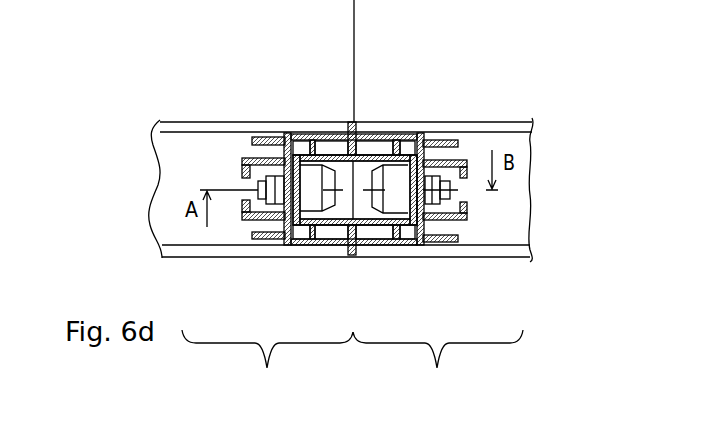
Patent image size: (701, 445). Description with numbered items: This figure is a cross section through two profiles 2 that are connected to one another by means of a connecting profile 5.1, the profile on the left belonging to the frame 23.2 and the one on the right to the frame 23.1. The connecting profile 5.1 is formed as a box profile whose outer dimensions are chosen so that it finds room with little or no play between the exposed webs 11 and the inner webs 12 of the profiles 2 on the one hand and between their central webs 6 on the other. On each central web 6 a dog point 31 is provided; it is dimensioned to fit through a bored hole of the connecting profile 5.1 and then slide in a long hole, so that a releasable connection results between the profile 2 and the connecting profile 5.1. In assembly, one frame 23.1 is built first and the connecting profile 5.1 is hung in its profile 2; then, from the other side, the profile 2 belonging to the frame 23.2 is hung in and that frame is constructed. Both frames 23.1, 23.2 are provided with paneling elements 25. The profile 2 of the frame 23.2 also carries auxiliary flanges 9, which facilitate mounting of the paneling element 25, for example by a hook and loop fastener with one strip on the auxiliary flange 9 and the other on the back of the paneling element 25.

The paneling element 25 is at (170, 121).
The profile 2 is at (346, 186).
The central web 6 is at (265, 139).
The auxiliary flange 9 is at (270, 233).
The inner web 12 is at (307, 136).
The connecting profile 5.1 is at (380, 226).
The exposed web 11 is at (356, 124).
The dog point 31 is at (427, 160).
The frame 23.2 is at (267, 371).
The frame 23.1 is at (438, 371).